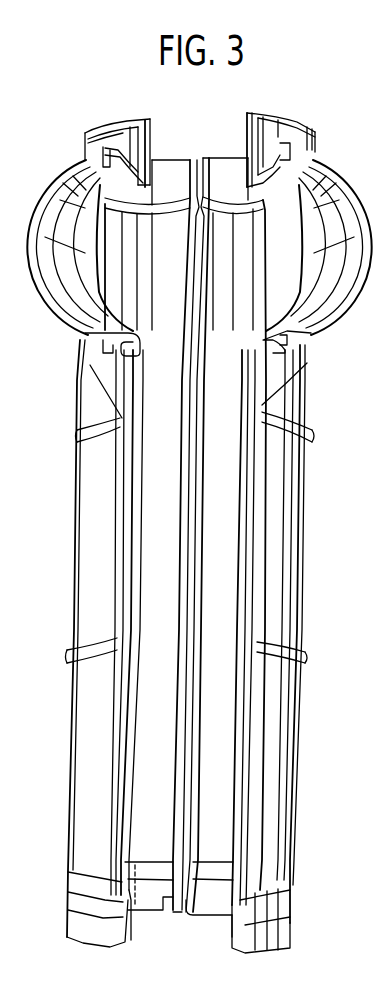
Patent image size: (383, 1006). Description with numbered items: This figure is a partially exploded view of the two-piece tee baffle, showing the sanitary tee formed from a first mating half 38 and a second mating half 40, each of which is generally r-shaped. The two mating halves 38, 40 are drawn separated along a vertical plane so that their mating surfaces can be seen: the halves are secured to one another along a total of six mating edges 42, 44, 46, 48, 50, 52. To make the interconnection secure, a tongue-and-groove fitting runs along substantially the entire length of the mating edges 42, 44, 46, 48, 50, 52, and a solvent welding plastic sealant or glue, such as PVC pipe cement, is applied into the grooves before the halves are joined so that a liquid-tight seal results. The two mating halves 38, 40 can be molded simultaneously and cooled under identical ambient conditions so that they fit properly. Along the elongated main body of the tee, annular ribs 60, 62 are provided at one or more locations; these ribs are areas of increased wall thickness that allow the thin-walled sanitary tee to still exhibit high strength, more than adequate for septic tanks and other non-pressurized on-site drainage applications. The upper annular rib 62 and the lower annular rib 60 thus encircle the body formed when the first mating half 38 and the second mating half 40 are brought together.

The first mating half 38 is at (105, 568).
The second mating half 40 is at (278, 580).
The mating edge 42 is at (167, 896).
The mating edge 44 is at (190, 898).
The mating edge 46 is at (128, 128).
The mating edge 48 is at (277, 108).
The mating edge 50 is at (112, 792).
The mating edge 52 is at (240, 778).
The annular rib 60 is at (277, 642).
The annular rib 62 is at (282, 412).